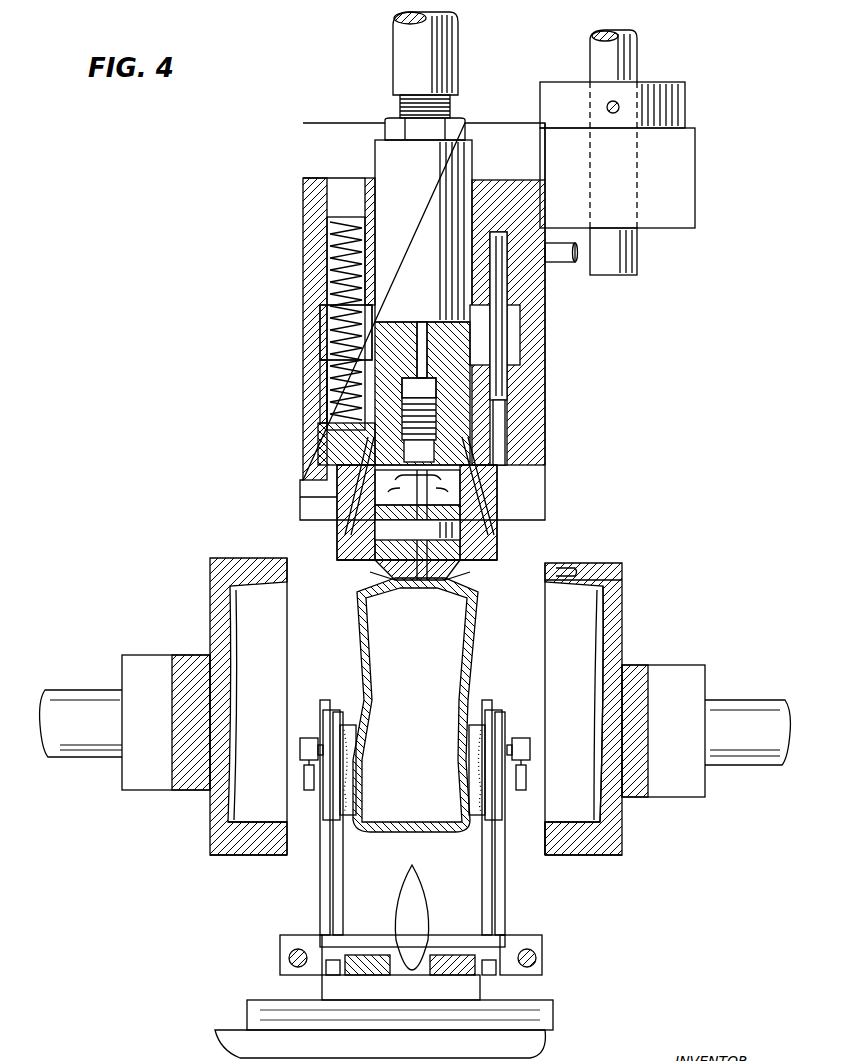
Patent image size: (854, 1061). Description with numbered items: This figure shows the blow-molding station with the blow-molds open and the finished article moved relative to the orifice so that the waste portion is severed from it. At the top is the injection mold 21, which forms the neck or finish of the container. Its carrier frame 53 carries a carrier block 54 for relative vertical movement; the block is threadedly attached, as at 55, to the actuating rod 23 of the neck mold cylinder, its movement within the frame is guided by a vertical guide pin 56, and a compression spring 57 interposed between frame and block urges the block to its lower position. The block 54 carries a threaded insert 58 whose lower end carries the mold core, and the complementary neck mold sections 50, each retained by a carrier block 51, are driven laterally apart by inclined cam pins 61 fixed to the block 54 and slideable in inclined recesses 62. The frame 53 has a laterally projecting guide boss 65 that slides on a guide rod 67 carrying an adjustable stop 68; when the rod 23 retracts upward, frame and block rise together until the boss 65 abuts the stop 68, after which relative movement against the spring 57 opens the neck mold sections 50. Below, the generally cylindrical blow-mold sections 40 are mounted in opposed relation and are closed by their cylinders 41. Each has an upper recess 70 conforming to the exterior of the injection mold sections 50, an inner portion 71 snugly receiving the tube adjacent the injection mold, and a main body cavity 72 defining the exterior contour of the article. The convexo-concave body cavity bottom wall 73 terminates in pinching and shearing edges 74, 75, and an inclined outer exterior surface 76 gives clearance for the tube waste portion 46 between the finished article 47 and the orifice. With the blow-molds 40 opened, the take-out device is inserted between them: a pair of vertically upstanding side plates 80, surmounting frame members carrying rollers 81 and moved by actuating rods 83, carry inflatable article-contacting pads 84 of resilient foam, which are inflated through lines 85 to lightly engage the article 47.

The actuating rod 23 is at (398, 57).
The threaded attachment 55 is at (398, 108).
The guide rod 67 is at (637, 60).
The adjustable stop 68 is at (685, 100).
The guide boss 65 is at (688, 186).
The carrier frame 53 is at (538, 292).
The compression spring 57 is at (322, 333).
The vertical guide pin 56 is at (505, 368).
The carrier block 54 is at (335, 435).
The inclined cam pins 61 is at (335, 495).
The injection mold 21 is at (328, 524).
The threaded insert 58 is at (419, 392).
The inclined recesses 62 is at (345, 548).
The carrier block 51 is at (417, 530).
The mold sections 50 is at (375, 575).
The upper recesses 70 is at (580, 568).
The inner portion 71 is at (560, 566).
The body cavity 72 is at (612, 600).
The body cavity bottom wall 73 is at (585, 830).
The pinching and shearing edge 74 is at (546, 845).
The pinching and shearing edge 75 is at (286, 840).
The inclined outer exterior surface 76 is at (285, 862).
The blow-mold sections 40 is at (208, 634).
The cylinders 41 is at (74, 697).
The finished article 47 is at (470, 640).
The inflatable article-contacting pads 84 is at (350, 722).
The lines 85 is at (310, 790).
The side plates 80 is at (320, 900).
The tube waste portion 46 is at (422, 905).
The actuating rods 83 is at (541, 962).
The rollers 81 is at (325, 985).